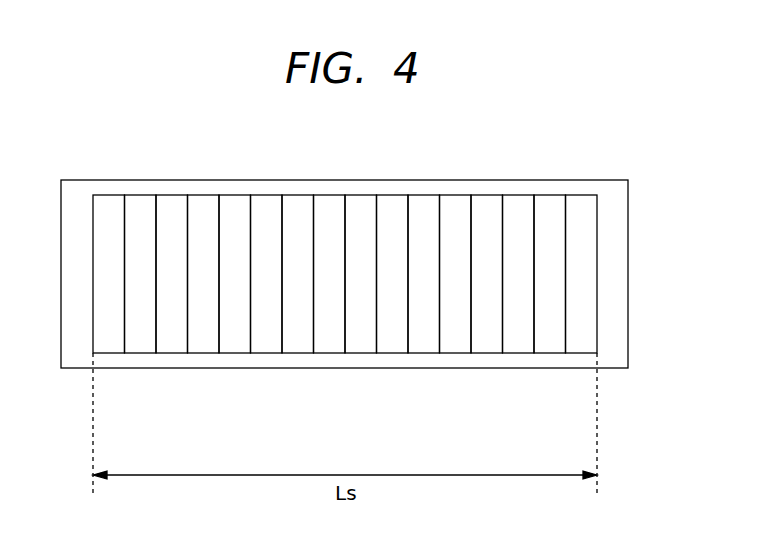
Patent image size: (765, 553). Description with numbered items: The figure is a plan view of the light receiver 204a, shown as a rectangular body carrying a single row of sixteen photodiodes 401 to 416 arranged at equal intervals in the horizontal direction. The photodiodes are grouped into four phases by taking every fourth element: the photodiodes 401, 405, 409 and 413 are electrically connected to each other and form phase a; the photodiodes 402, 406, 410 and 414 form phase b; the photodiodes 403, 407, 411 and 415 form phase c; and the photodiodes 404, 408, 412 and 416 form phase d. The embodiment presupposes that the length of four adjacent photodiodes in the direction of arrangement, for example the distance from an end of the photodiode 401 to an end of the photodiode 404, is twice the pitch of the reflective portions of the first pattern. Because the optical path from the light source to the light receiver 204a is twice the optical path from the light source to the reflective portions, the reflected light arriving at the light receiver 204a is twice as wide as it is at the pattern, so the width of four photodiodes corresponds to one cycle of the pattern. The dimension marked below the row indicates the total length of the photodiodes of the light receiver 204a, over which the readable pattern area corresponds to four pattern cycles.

The light receiver 204a is at (611, 187).
The photodiode 401 is at (109, 206).
The photodiode 402 is at (139, 342).
The photodiode 403 is at (172, 206).
The photodiode 404 is at (202, 342).
The photodiode 405 is at (235, 206).
The photodiode 406 is at (265, 342).
The photodiode 407 is at (298, 206).
The photodiode 408 is at (328, 342).
The photodiode 409 is at (361, 206).
The photodiode 410 is at (391, 342).
The photodiode 411 is at (424, 206).
The photodiode 412 is at (454, 342).
The photodiode 413 is at (487, 206).
The photodiode 414 is at (517, 342).
The photodiode 415 is at (550, 206).
The photodiode 416 is at (578, 342).